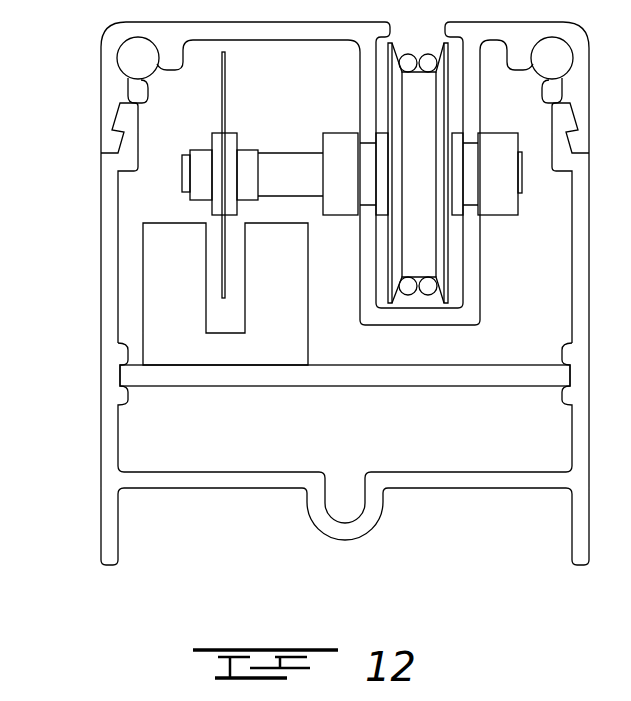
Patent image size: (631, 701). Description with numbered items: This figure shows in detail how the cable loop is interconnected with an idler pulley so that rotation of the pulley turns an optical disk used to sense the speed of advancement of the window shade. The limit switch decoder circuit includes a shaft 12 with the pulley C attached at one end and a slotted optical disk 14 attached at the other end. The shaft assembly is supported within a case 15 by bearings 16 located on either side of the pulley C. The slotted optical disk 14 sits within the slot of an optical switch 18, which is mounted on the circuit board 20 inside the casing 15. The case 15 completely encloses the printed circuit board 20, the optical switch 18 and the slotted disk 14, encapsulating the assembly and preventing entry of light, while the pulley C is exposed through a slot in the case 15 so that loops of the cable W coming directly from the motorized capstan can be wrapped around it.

The case 15 is at (108, 202).
The circuit board 20 is at (133, 373).
The optical switch 18 is at (165, 302).
The slotted optical disk 14 is at (220, 249).
The shaft 12 is at (298, 175).
The bearings 16 is at (343, 154).
The pulley C is at (421, 214).
The cable W is at (412, 288).